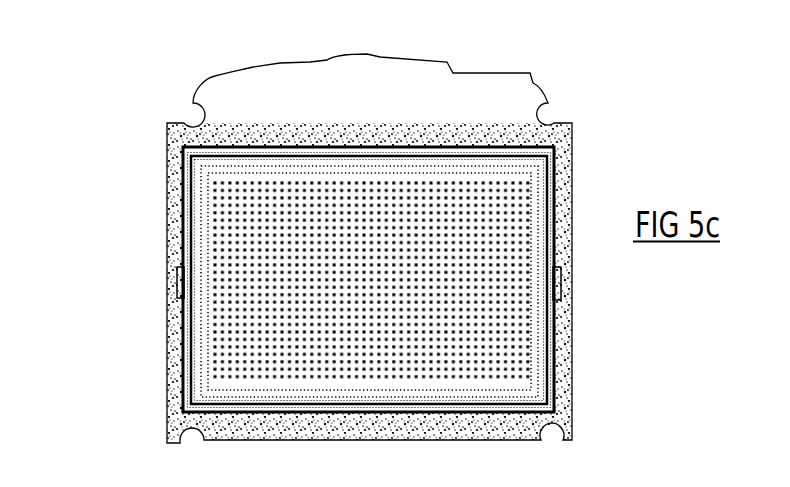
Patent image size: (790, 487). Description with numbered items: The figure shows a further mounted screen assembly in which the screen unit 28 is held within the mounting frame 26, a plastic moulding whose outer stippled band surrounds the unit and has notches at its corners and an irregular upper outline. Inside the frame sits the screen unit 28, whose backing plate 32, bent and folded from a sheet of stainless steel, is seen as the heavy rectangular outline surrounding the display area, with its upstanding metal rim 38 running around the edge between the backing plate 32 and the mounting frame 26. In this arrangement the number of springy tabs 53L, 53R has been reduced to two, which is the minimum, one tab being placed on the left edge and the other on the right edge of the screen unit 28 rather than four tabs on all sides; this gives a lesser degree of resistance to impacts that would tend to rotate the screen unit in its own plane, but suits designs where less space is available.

The mounting frame 26 is at (237, 107).
The screen unit 28 is at (237, 227).
The backing plate 32 is at (347, 150).
The upstanding metal rim 38 is at (558, 173).
The springy tab 53L is at (177, 287).
The springy tab 53R is at (562, 292).